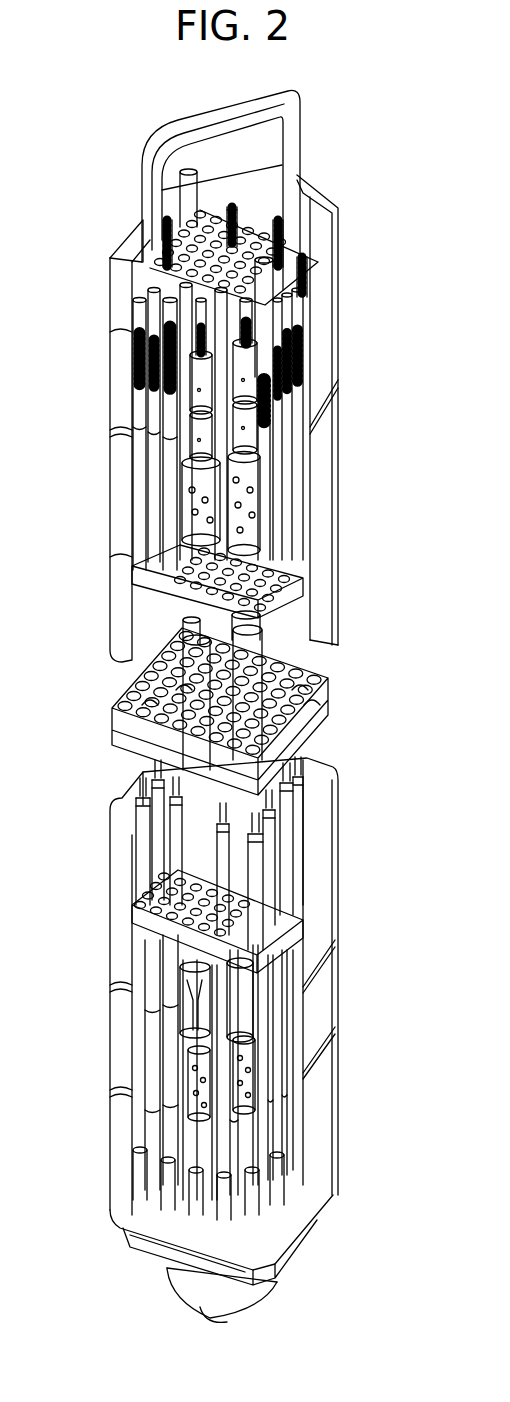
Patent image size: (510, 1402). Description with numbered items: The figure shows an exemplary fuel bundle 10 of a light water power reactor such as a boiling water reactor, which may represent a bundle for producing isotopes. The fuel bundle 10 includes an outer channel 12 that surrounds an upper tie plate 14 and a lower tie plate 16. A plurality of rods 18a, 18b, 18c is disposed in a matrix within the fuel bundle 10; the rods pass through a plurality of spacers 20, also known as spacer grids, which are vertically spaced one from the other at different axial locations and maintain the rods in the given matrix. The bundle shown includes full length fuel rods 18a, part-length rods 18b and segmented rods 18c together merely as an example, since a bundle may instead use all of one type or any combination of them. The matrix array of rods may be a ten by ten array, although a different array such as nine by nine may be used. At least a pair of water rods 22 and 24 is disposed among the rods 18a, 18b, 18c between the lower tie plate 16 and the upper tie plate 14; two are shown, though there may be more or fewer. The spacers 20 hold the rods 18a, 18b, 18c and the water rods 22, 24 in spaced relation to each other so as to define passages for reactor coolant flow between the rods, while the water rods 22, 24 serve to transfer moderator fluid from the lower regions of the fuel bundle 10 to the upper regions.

The fuel bundle 10 is at (378, 414).
The outer channel 12 is at (115, 531).
The upper tie plate 14 is at (152, 332).
The lower tie plate 16 is at (243, 1152).
The full length fuel rods 18a is at (278, 508).
The part-length rods 18b is at (266, 874).
The segmented rods 18c is at (170, 486).
The spacers 20 is at (150, 596).
The water rod 22 is at (142, 672).
The water rod 24 is at (255, 652).